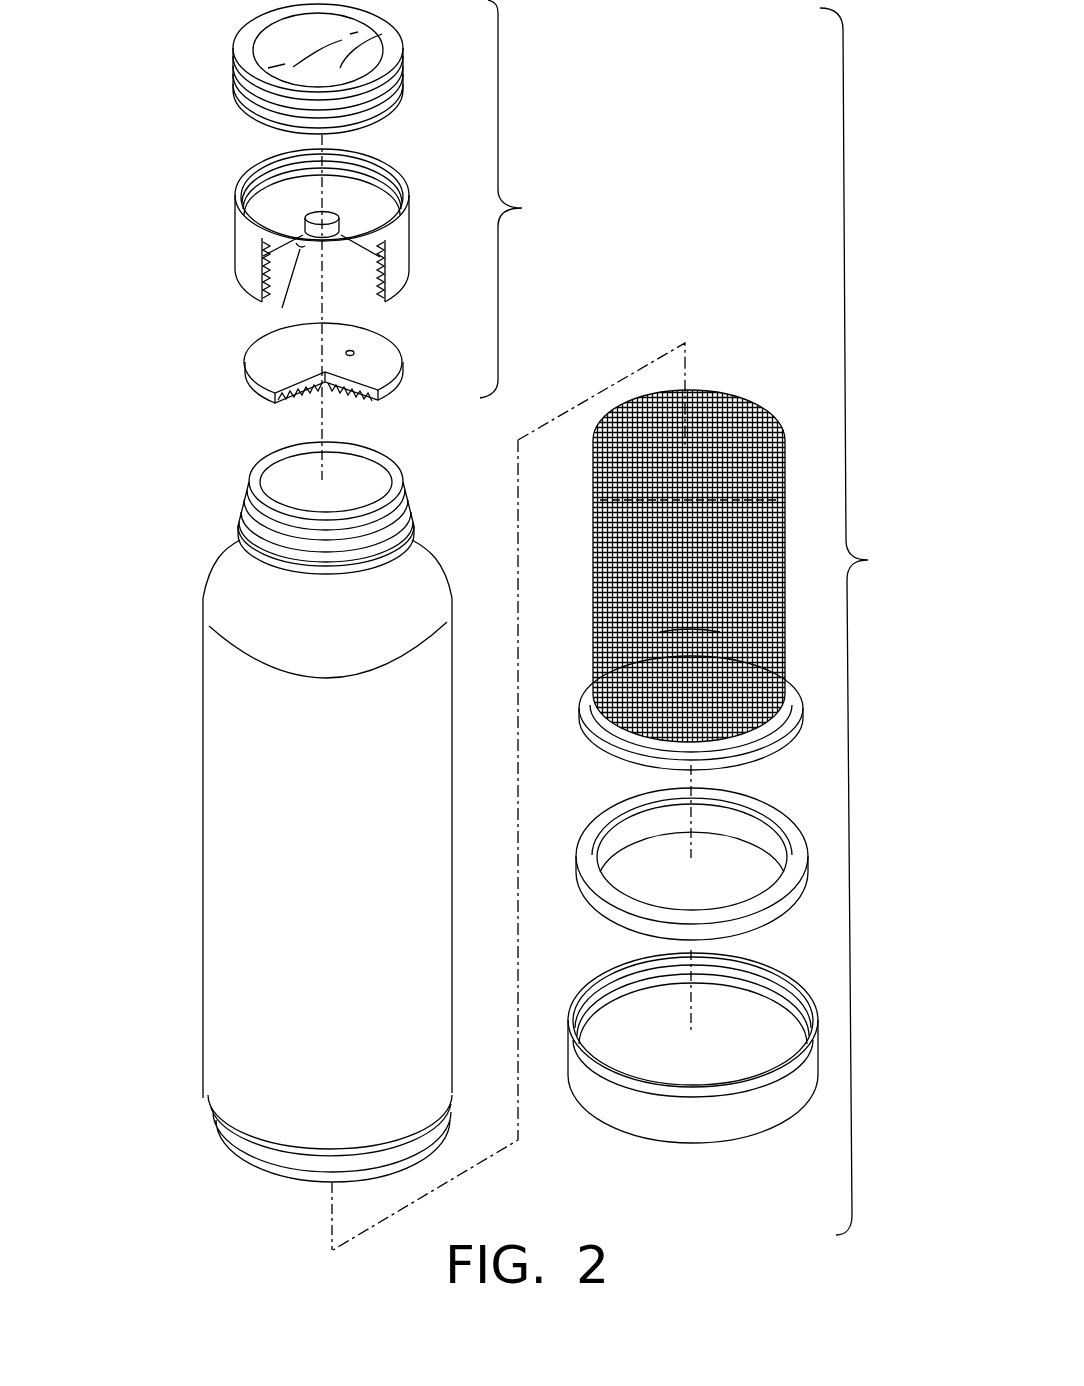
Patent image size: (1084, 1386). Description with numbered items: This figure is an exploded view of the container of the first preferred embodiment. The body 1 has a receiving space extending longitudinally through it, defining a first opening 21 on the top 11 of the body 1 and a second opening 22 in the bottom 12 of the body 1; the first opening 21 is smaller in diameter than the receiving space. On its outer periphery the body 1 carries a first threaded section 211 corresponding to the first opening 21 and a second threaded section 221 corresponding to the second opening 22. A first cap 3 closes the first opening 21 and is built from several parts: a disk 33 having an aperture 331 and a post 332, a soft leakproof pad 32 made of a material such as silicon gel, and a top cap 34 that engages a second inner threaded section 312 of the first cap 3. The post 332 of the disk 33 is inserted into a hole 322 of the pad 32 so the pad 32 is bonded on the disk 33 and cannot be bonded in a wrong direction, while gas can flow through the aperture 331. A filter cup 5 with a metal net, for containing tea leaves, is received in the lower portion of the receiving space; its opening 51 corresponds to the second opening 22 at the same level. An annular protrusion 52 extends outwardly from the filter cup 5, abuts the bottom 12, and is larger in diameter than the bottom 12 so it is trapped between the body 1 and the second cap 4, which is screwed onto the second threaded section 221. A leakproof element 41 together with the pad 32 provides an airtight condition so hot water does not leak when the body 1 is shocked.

The body 1 is at (185, 683).
The top 11 is at (333, 498).
The bottom 12 is at (296, 1173).
The first opening 21 is at (357, 480).
The first threaded section 211 is at (403, 497).
The second opening 22 is at (314, 1183).
The second threaded section 221 is at (235, 1137).
The first cap 3 is at (355, 211).
The second inner threaded section 312 is at (377, 180).
The pad 32 is at (327, 373).
The hole 322 is at (300, 395).
The disk 33 is at (344, 242).
The aperture 331 is at (330, 228).
The post 332 is at (284, 308).
The top cap 34 is at (338, 67).
The second cap 4 is at (632, 1151).
The leakproof element 41 is at (590, 847).
The filter cup 5 is at (684, 586).
The opening 51 is at (725, 760).
The annular protrusion 52 is at (588, 700).